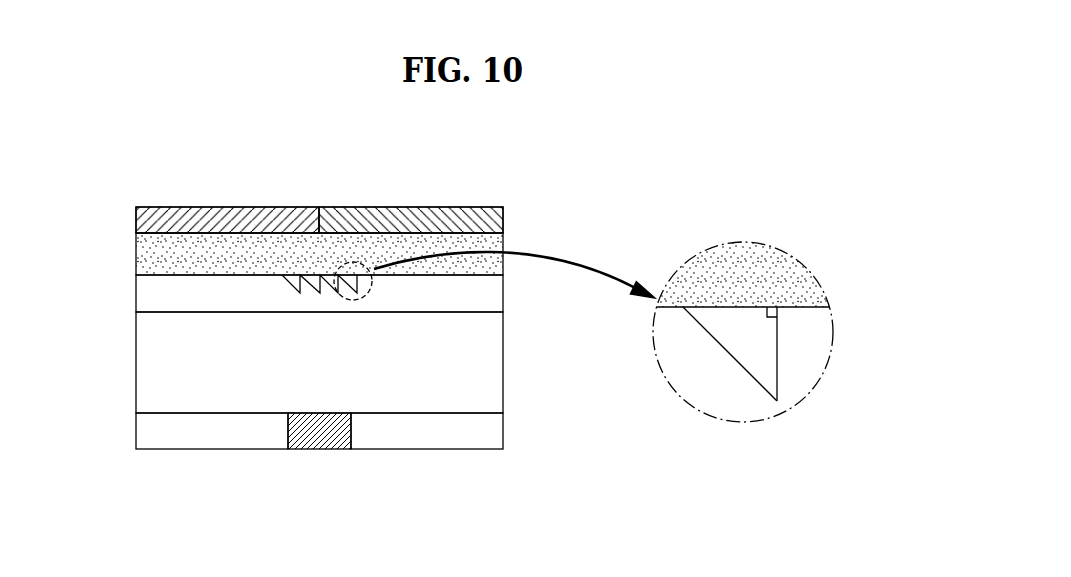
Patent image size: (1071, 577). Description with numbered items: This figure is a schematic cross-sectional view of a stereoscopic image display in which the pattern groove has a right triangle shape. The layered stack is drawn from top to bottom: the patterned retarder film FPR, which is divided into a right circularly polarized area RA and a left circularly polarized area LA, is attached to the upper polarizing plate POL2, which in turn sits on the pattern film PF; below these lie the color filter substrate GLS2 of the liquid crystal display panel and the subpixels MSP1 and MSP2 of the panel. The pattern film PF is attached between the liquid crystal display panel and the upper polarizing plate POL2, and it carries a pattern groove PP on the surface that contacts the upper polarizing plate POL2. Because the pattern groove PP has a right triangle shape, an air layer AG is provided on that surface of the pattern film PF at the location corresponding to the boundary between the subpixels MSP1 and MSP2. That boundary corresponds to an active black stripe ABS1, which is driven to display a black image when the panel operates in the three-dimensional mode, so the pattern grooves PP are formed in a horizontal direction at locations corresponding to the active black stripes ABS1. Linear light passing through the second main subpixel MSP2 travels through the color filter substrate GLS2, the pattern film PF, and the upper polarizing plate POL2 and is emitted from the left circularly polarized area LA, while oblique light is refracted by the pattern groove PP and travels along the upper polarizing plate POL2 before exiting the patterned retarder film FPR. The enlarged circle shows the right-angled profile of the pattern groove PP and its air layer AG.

The right circularly polarized area RA is at (213, 218).
The left circularly polarized area LA is at (408, 218).
The patterned retarder film FPR is at (355, 195).
The upper polarizing plate POL2 is at (140, 256).
The pattern film PF is at (142, 296).
The air layer AG is at (285, 278).
The pattern groove PP is at (366, 296).
The color filter substrate GLS2 is at (495, 367).
The first main subpixel MSP1 is at (143, 427).
The second main subpixel MSP2 is at (495, 433).
The active black stripe ABS1 is at (323, 445).